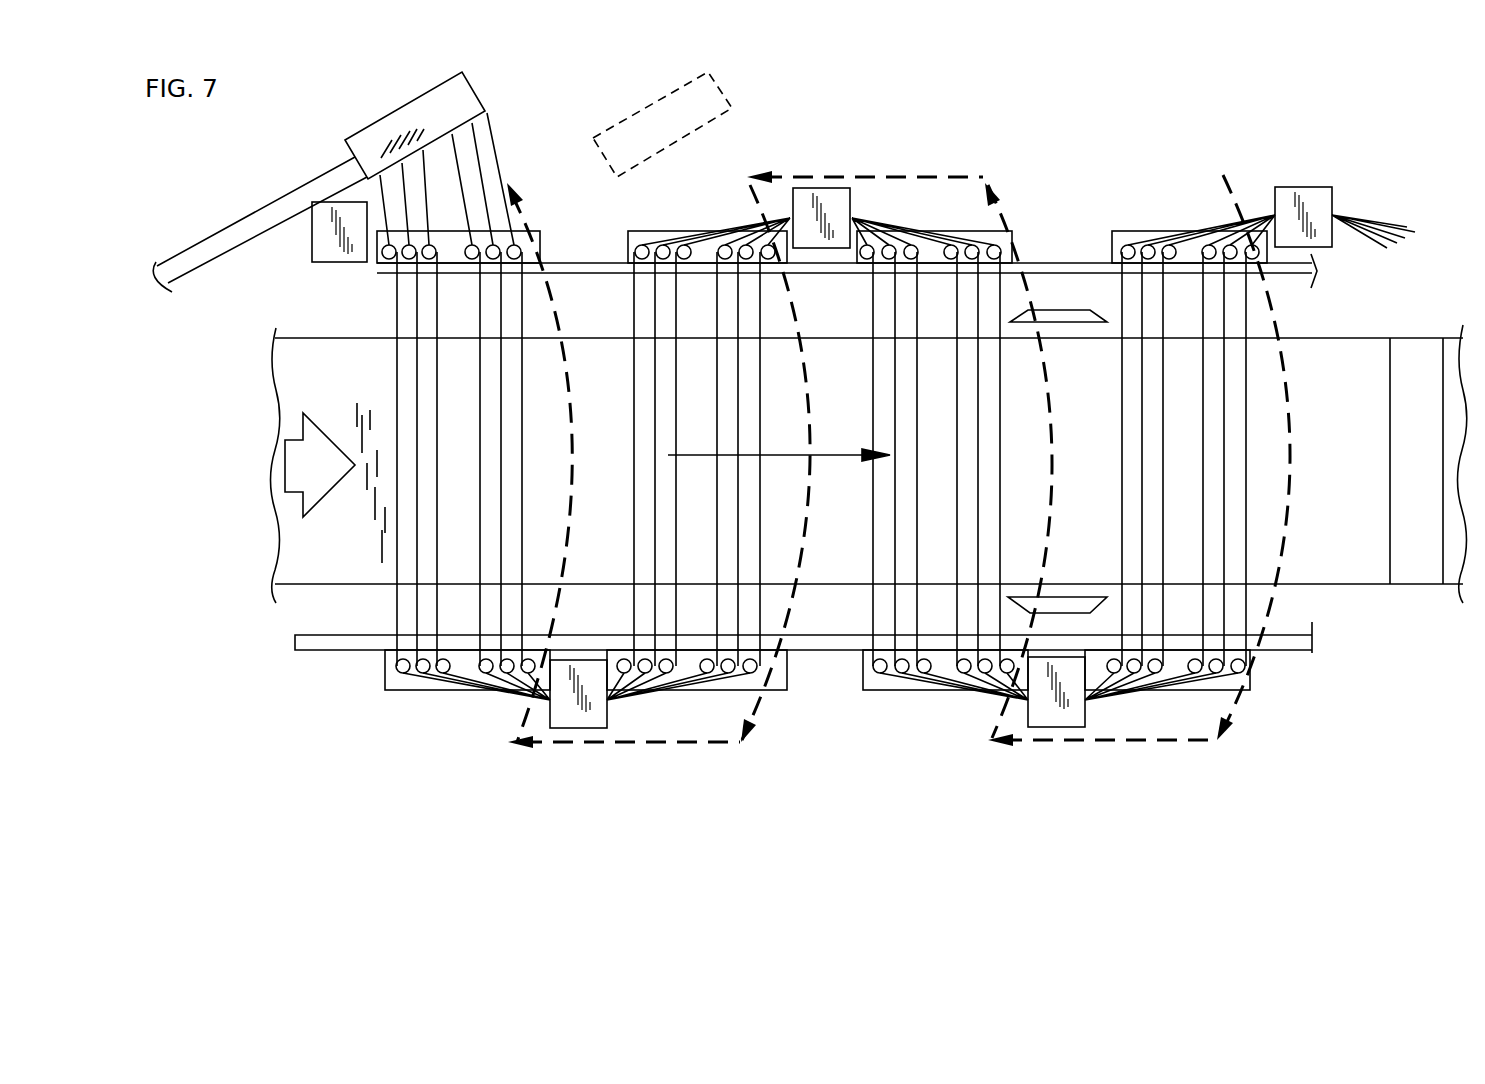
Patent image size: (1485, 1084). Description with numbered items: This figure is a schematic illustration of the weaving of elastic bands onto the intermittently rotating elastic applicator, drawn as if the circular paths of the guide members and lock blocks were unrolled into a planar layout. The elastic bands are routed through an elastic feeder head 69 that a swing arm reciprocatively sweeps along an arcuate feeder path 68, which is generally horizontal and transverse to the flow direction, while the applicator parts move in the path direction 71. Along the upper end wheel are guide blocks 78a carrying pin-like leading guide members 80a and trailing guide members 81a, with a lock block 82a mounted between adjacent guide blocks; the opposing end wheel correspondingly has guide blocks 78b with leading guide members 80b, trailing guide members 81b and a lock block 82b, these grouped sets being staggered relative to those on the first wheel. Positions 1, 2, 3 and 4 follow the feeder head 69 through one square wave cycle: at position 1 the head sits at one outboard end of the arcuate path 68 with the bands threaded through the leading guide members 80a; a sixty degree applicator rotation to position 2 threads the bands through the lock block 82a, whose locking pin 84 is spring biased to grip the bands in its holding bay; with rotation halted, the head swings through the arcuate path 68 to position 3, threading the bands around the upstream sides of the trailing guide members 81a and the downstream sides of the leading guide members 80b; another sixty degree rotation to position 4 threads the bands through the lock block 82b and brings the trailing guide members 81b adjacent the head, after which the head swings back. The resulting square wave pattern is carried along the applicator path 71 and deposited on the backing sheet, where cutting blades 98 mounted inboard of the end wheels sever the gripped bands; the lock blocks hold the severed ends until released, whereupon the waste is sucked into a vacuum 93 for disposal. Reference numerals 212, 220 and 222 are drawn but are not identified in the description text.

The position 1 is at (983, 177).
The position 2 is at (750, 165).
The position 3 is at (737, 750).
The position 4 is at (508, 750).
The arcuate feeder path 68 is at (577, 403).
The elastic feeder head 69 is at (403, 105).
The path direction 71 is at (847, 460).
The guide blocks 78a is at (457, 225).
The guide blocks 78b is at (417, 692).
The leading guide members 80a is at (437, 265).
The leading guide members 80b is at (760, 690).
The trailing guide members 81a is at (718, 262).
The trailing guide members 81b is at (397, 667).
The lock block 82a is at (335, 255).
The lock block 82b is at (582, 728).
The locking pin 84 is at (240, 217).
The vacuum 93 is at (510, 718).
The cutting blades 98 is at (1082, 322).
The yarn strands 212 is at (903, 230).
The web 220 is at (390, 362).
The web surface 222 is at (477, 513).